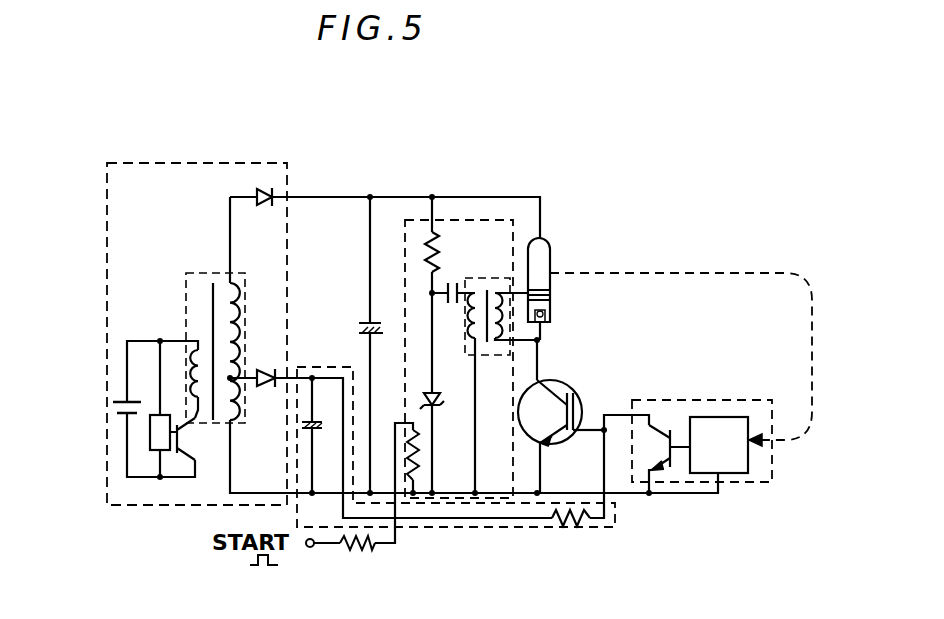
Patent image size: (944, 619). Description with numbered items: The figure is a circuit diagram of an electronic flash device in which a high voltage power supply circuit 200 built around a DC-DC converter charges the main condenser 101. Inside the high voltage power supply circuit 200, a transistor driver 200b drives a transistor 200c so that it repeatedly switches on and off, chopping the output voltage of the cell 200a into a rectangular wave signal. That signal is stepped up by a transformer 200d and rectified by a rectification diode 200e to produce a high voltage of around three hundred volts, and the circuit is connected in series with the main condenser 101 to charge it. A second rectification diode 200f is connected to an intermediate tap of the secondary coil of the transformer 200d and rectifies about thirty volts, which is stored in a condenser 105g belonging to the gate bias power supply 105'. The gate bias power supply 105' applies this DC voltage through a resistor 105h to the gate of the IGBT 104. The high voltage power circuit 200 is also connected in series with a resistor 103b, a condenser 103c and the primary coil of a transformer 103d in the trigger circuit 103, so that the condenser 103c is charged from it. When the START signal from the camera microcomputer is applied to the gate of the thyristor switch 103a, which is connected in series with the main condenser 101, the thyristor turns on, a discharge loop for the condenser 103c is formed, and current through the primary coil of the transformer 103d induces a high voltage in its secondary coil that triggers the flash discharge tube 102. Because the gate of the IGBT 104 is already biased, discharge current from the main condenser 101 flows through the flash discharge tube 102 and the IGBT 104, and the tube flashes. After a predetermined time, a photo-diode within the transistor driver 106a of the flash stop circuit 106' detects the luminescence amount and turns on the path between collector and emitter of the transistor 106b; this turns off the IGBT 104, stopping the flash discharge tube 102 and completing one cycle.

The high voltage power supply circuit 200 is at (241, 142).
The cell 200a is at (118, 425).
The transistor driver 200b is at (148, 448).
The transistor 200c is at (183, 455).
The transformer 200d is at (187, 272).
The rectification diode 200e is at (272, 188).
The rectification diode 200f is at (258, 372).
The main condenser 101 is at (367, 320).
The flash discharge tube 102 is at (549, 246).
The trigger circuit 103 is at (490, 218).
The thyristor switch 103a is at (438, 412).
The resistor 103b is at (468, 252).
The condenser 103c is at (431, 290).
The transformer 103d is at (513, 366).
The IGBT 104 is at (569, 386).
The gate bias power supply 105' is at (494, 462).
The condenser 105g is at (315, 410).
The resistor 105h is at (573, 523).
The flash stop circuit 106' is at (743, 449).
The transistor driver 106a is at (733, 417).
The transistor 106b is at (660, 428).